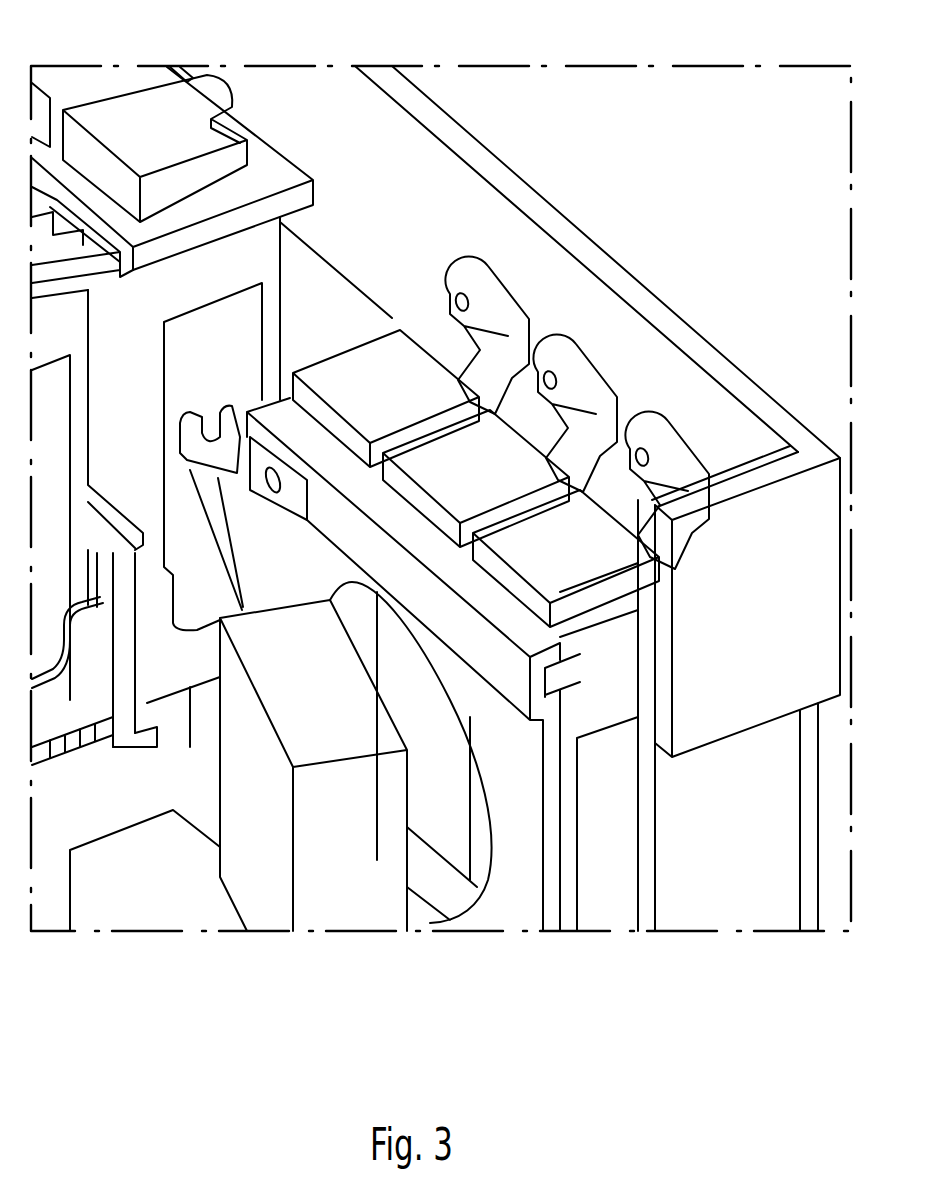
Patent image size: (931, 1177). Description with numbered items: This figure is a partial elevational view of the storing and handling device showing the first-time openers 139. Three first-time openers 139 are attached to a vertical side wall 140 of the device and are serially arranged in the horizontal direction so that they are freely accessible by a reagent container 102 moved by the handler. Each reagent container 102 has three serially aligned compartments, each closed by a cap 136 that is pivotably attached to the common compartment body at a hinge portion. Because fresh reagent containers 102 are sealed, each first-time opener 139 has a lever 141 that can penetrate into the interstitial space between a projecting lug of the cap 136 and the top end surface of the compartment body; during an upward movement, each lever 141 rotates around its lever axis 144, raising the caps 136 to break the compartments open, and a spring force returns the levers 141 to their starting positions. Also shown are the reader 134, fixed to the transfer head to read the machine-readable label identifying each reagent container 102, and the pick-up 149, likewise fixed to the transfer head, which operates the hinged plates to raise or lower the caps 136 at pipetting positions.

The reagent container 102 is at (138, 113).
The reader 134 is at (267, 900).
The cap 136 is at (405, 401).
The first-time opener 139 is at (629, 412).
The vertical side wall 140 is at (512, 187).
The lever 141 is at (719, 463).
The lever axis 144 is at (673, 505).
The pick-up 149 is at (193, 430).